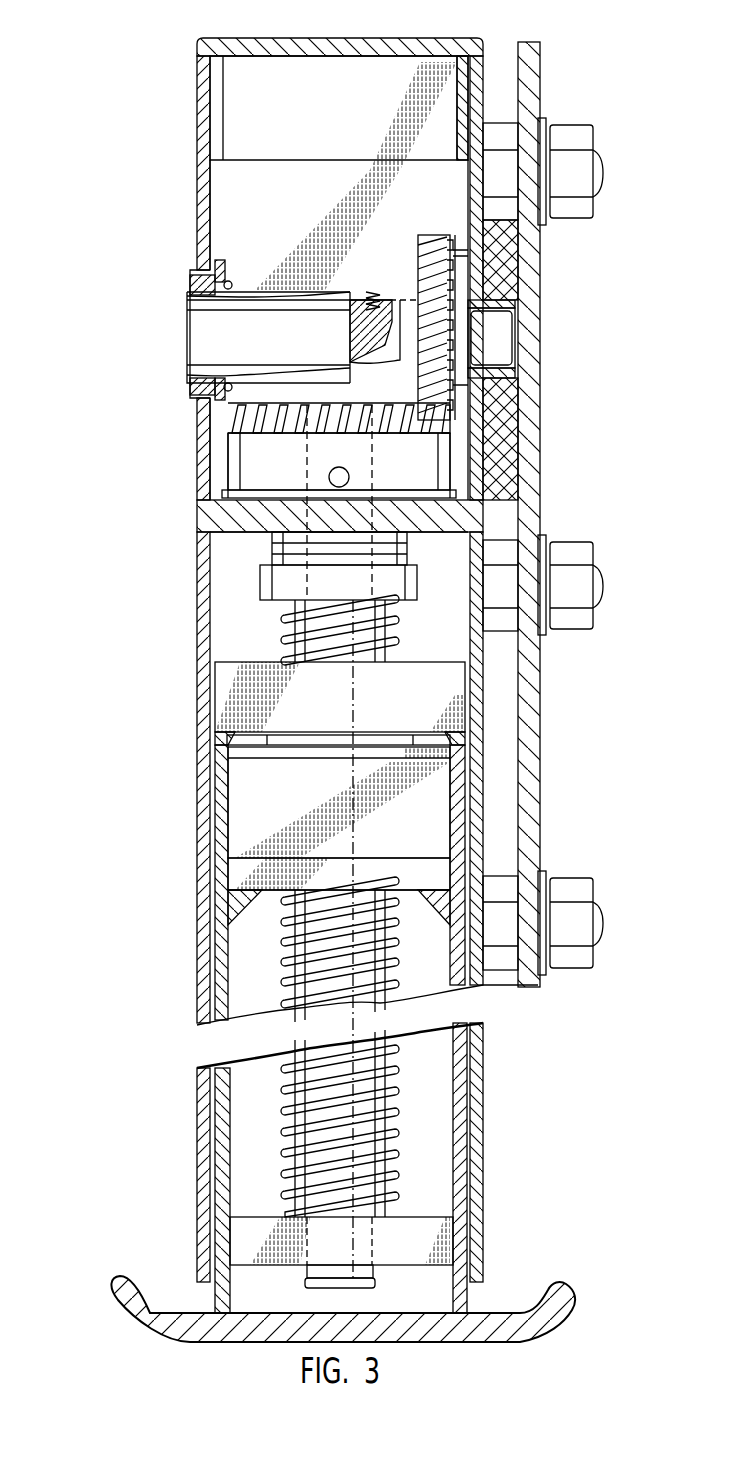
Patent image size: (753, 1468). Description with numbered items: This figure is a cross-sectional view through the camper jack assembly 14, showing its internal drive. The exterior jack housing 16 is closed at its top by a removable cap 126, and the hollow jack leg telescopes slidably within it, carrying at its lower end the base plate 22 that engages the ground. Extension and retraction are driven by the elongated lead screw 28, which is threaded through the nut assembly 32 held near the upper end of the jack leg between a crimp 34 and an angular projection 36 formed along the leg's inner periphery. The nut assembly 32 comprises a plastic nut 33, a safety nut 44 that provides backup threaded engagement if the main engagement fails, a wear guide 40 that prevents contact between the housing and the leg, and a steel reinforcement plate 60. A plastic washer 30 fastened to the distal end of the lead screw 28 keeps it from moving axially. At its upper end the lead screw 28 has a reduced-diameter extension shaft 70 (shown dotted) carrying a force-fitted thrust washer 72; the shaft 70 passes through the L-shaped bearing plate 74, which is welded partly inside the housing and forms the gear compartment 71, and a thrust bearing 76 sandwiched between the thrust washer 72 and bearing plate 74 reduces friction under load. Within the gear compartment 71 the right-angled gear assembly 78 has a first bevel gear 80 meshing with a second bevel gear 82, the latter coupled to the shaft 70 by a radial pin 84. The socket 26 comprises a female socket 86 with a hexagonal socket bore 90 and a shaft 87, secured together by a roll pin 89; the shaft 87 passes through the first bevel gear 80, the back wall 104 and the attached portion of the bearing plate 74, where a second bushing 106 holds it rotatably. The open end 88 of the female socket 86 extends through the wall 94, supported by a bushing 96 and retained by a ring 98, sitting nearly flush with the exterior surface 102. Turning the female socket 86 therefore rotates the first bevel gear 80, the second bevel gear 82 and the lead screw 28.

The camper jack assembly 14 is at (584, 100).
The jack housing 16 is at (475, 1103).
The base plate 22 is at (120, 1282).
The socket 26 is at (312, 272).
The lead screw 28 is at (420, 585).
The plastic washer 30 is at (250, 1220).
The nut assembly 32 is at (262, 790).
The nut 33 is at (430, 800).
The crimp 34 is at (215, 738).
The angular projection 36 is at (240, 893).
The wear guide 40 is at (230, 677).
The safety nut 44 is at (215, 822).
The steel reinforcement plate 60 is at (462, 766).
The extension shaft 70 is at (372, 468).
The gear compartment 71 is at (310, 75).
The thrust washer 72 is at (418, 555).
The bearing plate 74 is at (470, 512).
The thrust bearing 76 is at (460, 528).
The right-angled gear assembly 78 is at (222, 470).
The first bevel gear 80 is at (452, 262).
The second bevel gear 82 is at (450, 428).
The radial pin 84 is at (330, 470).
The female socket 86 is at (290, 292).
The shaft 87 is at (493, 336).
The open end 88 is at (190, 298).
The roll pin 89 is at (376, 292).
The socket bore 90 is at (205, 336).
The wall 94 is at (197, 94).
The bushing 96 is at (192, 280).
The ring 98 is at (220, 260).
The exterior surface 102 is at (198, 276).
The back wall 104 is at (483, 238).
The second bushing 106 is at (500, 374).
The removable cap 126 is at (310, 40).